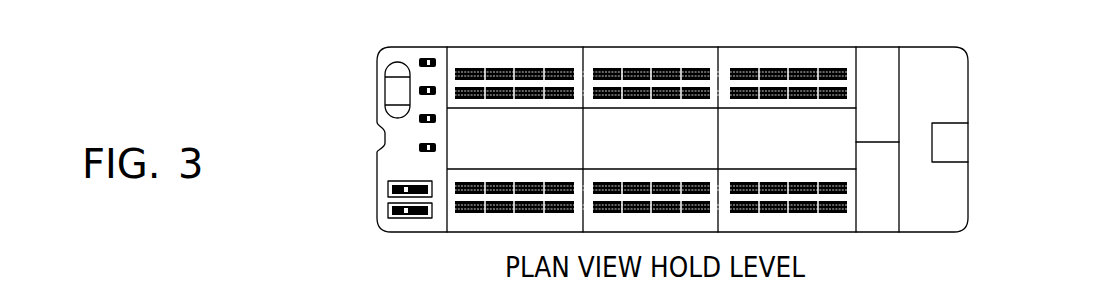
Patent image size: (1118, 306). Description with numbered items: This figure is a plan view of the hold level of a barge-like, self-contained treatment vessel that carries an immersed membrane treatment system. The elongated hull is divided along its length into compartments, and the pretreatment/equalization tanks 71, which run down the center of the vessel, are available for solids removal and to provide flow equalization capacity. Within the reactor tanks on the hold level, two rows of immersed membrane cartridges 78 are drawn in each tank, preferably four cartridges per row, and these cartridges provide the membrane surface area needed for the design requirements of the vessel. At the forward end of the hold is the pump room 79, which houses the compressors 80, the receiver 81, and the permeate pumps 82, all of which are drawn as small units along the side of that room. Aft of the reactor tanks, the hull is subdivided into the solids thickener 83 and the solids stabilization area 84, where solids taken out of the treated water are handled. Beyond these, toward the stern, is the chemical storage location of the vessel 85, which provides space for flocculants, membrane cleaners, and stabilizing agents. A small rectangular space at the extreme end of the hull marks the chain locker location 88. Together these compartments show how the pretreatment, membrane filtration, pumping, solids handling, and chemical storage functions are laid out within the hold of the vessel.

The pretreatment/equalization tank 71 is at (651, 120).
The immersed membrane cartridge 78 is at (669, 145).
The pump room 79 is at (400, 151).
The compressor 80 is at (361, 209).
The receiver 81 is at (383, 90).
The permeate pump 82 is at (417, 60).
The solids thickener 83 is at (971, 208).
The solids stabilization area 84 is at (972, 73).
The chemical storage location 85 is at (978, 139).
The chain locker location 88 is at (948, 162).